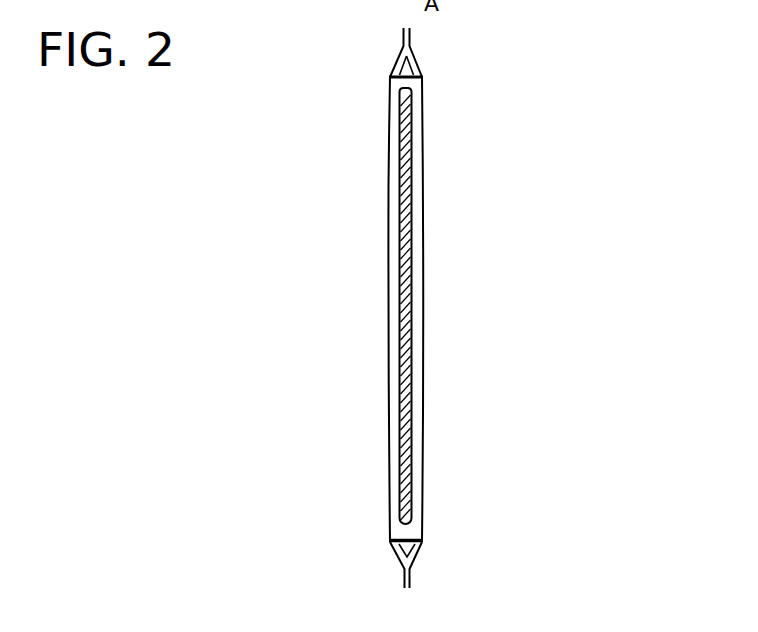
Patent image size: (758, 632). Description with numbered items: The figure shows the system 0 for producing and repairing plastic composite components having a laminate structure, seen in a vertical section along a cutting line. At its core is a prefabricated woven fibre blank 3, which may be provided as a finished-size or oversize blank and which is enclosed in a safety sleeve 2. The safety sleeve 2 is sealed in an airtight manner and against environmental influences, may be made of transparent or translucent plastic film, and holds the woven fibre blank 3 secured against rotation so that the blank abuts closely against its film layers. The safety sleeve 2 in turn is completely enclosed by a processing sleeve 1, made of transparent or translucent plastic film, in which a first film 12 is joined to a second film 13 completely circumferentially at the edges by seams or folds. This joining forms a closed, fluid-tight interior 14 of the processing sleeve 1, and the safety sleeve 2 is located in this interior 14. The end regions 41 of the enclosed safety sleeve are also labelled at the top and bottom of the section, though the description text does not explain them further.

The system 0 is at (441, 97).
The processing sleeve 1 is at (388, 155).
The first film 12 is at (389, 206).
The second film 13 is at (424, 183).
The interior 14 is at (403, 538).
The safety sleeve 2 is at (398, 272).
The woven fibre blank 3 is at (412, 249).
The end caps of inner tube 41 is at (409, 107).